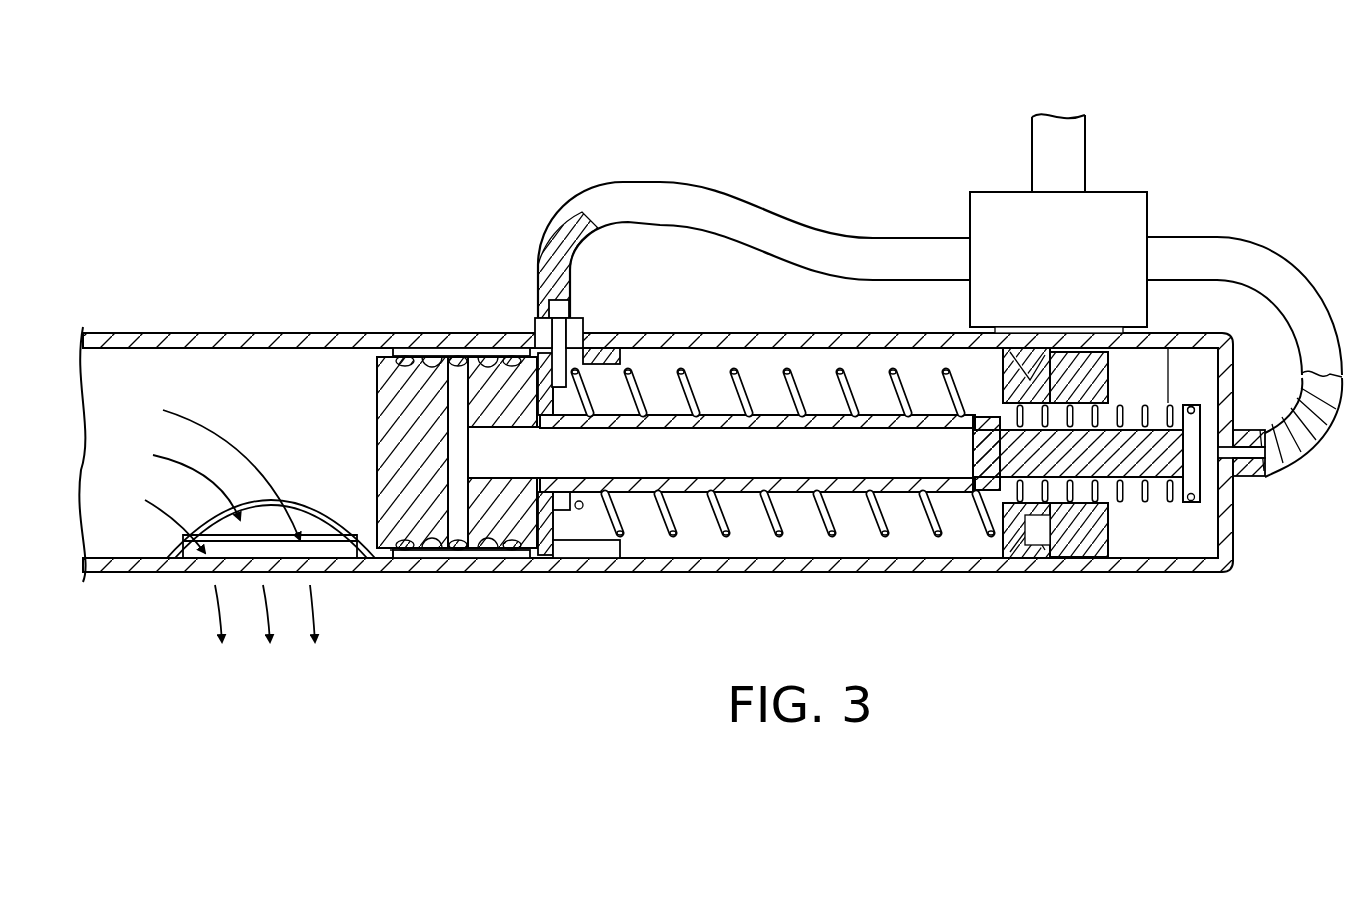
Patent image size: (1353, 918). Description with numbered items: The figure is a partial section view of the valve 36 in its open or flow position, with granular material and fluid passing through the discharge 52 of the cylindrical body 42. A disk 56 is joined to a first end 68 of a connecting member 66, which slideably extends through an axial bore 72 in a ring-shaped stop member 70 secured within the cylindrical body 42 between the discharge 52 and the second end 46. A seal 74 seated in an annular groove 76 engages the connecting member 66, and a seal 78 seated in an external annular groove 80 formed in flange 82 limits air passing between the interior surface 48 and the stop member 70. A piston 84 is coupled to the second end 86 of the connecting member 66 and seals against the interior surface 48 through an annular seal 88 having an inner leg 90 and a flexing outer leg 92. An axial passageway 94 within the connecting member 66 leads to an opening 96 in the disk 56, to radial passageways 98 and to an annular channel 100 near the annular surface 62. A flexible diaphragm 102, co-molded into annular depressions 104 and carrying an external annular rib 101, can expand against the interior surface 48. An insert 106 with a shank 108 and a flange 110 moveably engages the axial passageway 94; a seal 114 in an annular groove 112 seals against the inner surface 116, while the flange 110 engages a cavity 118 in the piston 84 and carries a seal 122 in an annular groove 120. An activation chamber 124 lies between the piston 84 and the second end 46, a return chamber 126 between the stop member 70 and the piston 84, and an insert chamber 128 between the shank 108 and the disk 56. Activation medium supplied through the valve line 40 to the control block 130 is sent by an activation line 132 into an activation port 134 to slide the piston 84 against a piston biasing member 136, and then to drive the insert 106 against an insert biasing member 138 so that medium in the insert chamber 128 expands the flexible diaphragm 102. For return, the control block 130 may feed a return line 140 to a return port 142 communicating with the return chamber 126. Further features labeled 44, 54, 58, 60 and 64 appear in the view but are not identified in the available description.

The valve 36 is at (250, 58).
The valve line 40 is at (1087, 150).
The cylindrical body 42 is at (240, 333).
The housing wall 44 is at (180, 333).
The second end 46 is at (1215, 262).
The interior surface 48 is at (226, 397).
The discharge 52 is at (195, 580).
The outlet baffle 54 is at (300, 540).
The disk 56 is at (372, 408).
The piston body 58 is at (430, 440).
The support bracket 60 is at (570, 566).
The annular surface 62 is at (538, 560).
The lower seal 64 is at (400, 566).
The connecting member 66 is at (775, 408).
The first end 68 is at (552, 478).
The stop member 70 is at (655, 350).
The axial bore 72 is at (575, 495).
The seal 74 is at (555, 412).
The annular groove 76 is at (583, 512).
The seal 78 is at (580, 340).
The external annular groove 80 is at (620, 348).
The flange 82 is at (620, 540).
The piston 84 is at (1000, 382).
The second end 86 is at (1100, 527).
The annular seal 88 is at (1003, 560).
The inner leg 90 is at (1080, 545).
The outer leg 92 is at (1045, 552).
The axial passageway 94 is at (771, 462).
The opening 96 is at (486, 462).
The radial passageways 98 is at (385, 455).
The annular channel 100 is at (500, 558).
The external annular rib 101 is at (445, 348).
The flexible diaphragm 102 is at (398, 352).
The annular depressions 104 is at (485, 348).
The insert 106 is at (1150, 490).
The shank 108 is at (980, 445).
The flange 110 is at (1165, 398).
The annular groove 112 is at (935, 400).
The seal 114 is at (985, 500).
The inner surface 116 is at (875, 430).
The cavity 118 is at (1110, 410).
The annular groove 120 is at (1200, 408).
The seal 122 is at (1194, 405).
The activation chamber 124 is at (1115, 374).
The return chamber 126 is at (892, 542).
The insert chamber 128 is at (708, 462).
The control block 130 is at (1040, 271).
The activation line 132 is at (1305, 268).
The activation port 134 is at (1245, 480).
The piston biasing member 136 is at (792, 385).
The insert biasing member 138 is at (1215, 572).
The return line 140 is at (590, 215).
The return port 142 is at (590, 414).